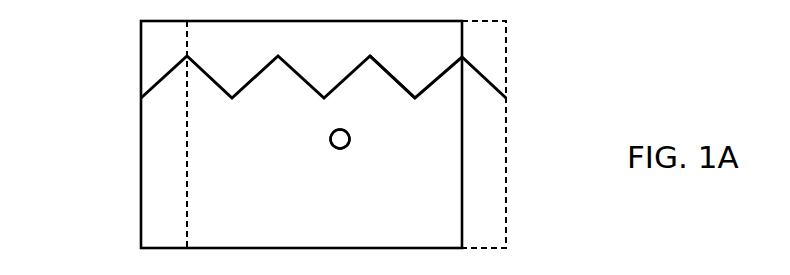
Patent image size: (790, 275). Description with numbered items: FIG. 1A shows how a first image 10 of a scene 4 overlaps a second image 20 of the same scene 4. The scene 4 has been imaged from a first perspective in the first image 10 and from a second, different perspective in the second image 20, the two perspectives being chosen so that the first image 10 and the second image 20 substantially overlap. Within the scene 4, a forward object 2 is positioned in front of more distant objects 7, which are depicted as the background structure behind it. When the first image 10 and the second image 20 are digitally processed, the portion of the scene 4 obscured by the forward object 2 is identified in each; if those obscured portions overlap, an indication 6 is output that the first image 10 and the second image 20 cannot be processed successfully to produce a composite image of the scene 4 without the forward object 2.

The first image 10 is at (141, 43).
The second image 20 is at (506, 43).
The scene 4 is at (295, 71).
The more distant objects 7 is at (388, 72).
The indication 6 is at (349, 134).
The forward object 2 is at (342, 149).